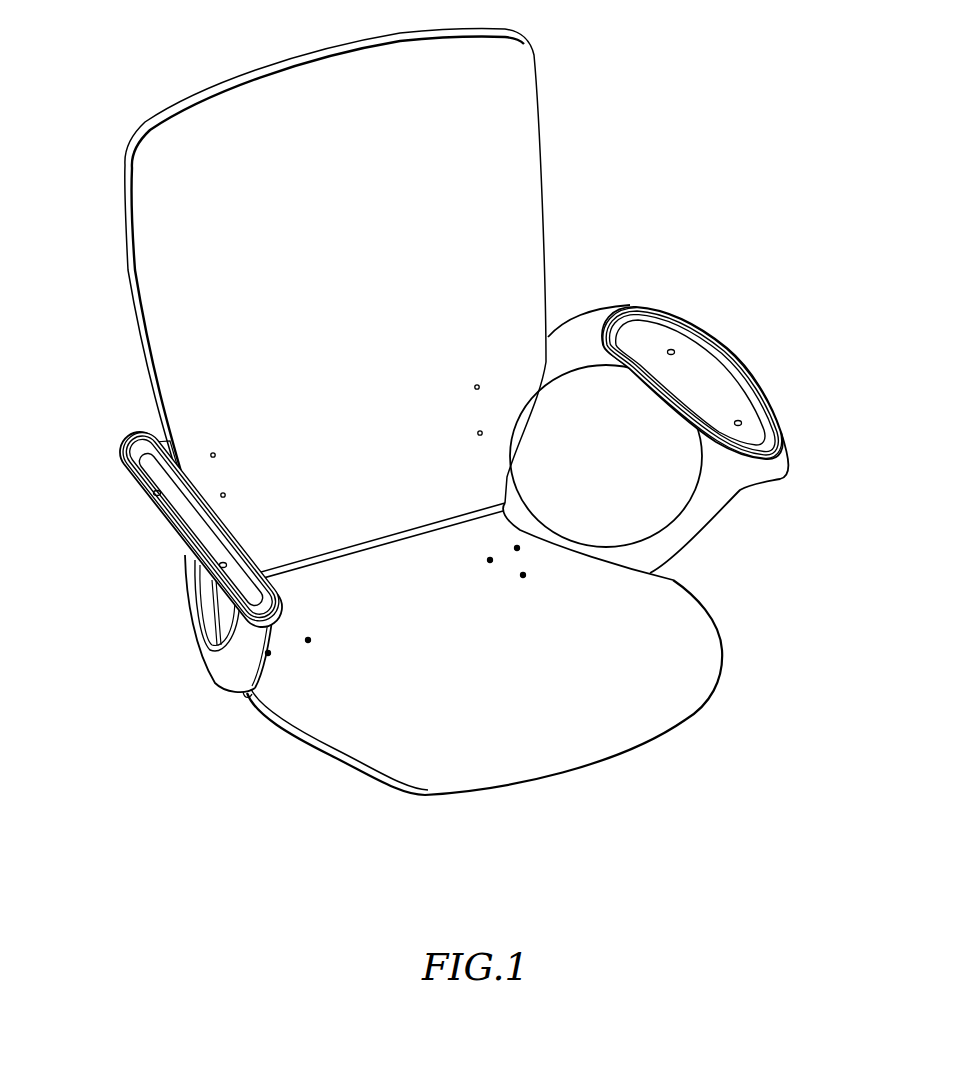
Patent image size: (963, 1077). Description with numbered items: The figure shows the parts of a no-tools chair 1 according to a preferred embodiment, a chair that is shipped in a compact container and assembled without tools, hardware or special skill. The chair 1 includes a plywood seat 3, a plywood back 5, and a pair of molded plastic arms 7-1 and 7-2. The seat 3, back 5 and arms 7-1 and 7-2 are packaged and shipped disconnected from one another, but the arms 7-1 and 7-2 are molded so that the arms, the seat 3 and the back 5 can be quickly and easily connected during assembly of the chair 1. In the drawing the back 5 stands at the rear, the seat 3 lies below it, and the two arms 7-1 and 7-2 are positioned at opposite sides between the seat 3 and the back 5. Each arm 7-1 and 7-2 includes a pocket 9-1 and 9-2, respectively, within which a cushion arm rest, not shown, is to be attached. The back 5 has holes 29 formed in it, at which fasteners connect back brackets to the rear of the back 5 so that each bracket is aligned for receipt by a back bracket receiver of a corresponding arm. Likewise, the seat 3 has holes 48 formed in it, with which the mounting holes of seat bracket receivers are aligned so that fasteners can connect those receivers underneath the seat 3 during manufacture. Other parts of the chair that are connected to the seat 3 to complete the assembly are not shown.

The chair 1 is at (584, 264).
The seat 3 is at (625, 738).
The back 5 is at (165, 193).
The arm 7-1 is at (152, 525).
The arm 7-2 is at (700, 325).
The pocket 9-1 is at (207, 543).
The pocket 9-2 is at (735, 393).
The holes 29 is at (225, 493).
The holes 48 is at (308, 640).